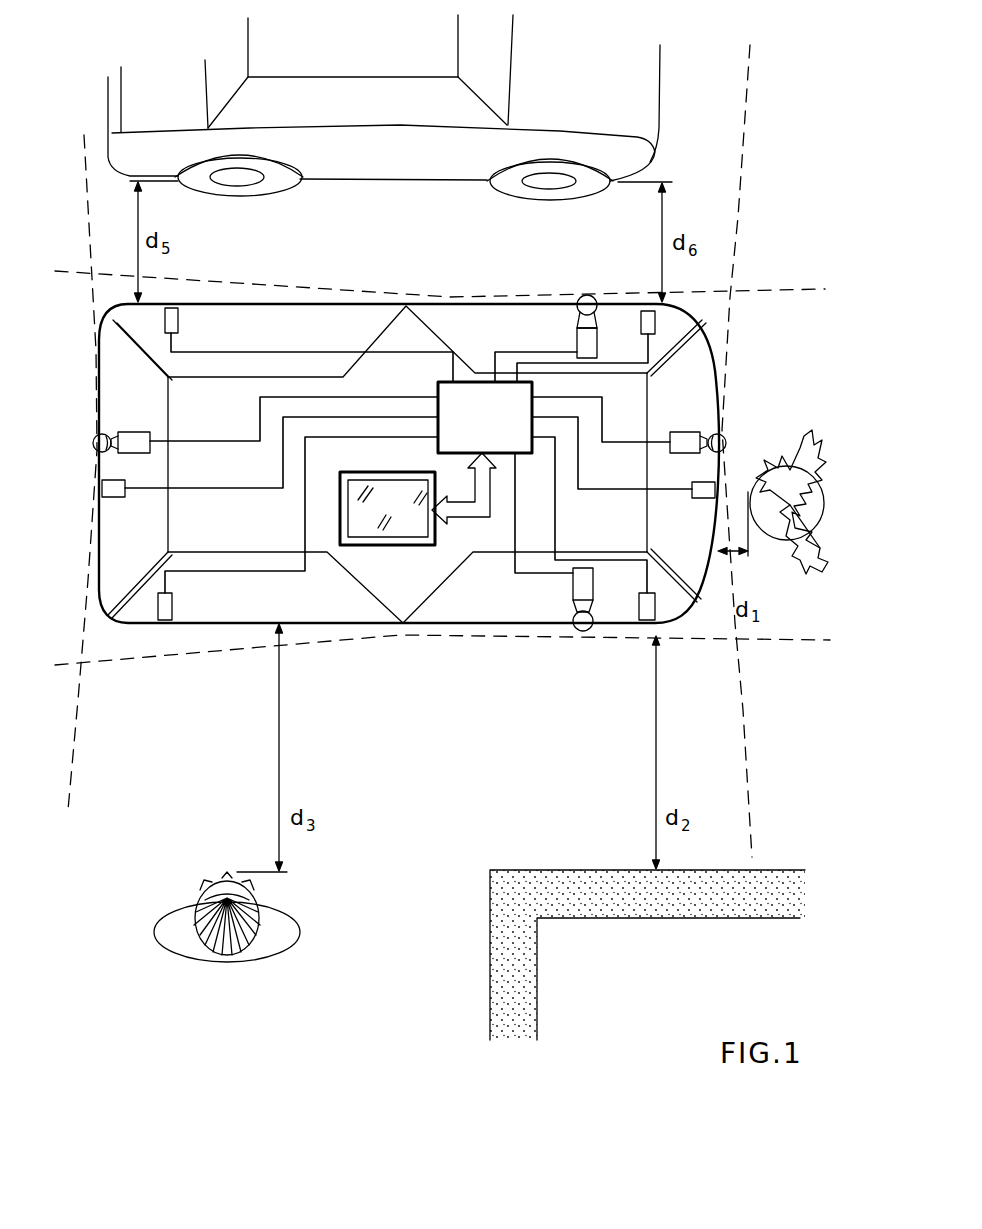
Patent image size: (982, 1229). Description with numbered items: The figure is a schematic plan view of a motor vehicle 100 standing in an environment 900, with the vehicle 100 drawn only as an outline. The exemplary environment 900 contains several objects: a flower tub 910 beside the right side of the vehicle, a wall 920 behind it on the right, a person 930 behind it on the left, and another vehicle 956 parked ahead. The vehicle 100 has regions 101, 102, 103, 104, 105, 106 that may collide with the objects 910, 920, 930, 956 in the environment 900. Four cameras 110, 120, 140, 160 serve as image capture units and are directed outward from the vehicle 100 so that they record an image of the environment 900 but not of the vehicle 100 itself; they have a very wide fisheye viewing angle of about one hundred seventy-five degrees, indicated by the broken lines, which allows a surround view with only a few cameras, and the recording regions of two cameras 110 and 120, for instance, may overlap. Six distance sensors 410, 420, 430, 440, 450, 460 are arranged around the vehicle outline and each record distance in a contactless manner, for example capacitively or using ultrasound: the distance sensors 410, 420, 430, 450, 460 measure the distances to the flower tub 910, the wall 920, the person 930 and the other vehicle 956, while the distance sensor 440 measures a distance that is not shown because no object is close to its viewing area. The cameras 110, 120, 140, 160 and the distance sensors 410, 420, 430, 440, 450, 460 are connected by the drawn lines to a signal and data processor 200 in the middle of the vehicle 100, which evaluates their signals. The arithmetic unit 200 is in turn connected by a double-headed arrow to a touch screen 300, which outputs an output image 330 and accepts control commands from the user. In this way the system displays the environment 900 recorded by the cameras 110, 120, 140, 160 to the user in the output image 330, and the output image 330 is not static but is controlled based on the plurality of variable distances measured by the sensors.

The motor vehicle 100 is at (725, 334).
The region of the vehicle 101 is at (640, 515).
The region of the vehicle 102 is at (446, 565).
The region of the vehicle 103 is at (360, 574).
The region of the vehicle 104 is at (117, 620).
The region of the vehicle 105 is at (381, 343).
The region of the vehicle 106 is at (683, 375).
The camera 110 is at (690, 423).
The camera 120 is at (565, 595).
The camera 140 is at (124, 428).
The camera 160 is at (574, 328).
The signal and/or data processor 200 is at (472, 375).
The touch screen 300 is at (356, 474).
The output image 330 is at (399, 528).
The distance sensor 410 is at (711, 478).
The distance sensor 420 is at (665, 606).
The distance sensor 430 is at (180, 605).
The distance sensor 440 is at (112, 500).
The distance sensor 450 is at (184, 318).
The distance sensor 460 is at (661, 316).
The environment 900 is at (91, 182).
The flower tub 910 is at (767, 543).
The wall 920 is at (735, 872).
The person 930 is at (295, 908).
The another vehicle 956 is at (365, 170).